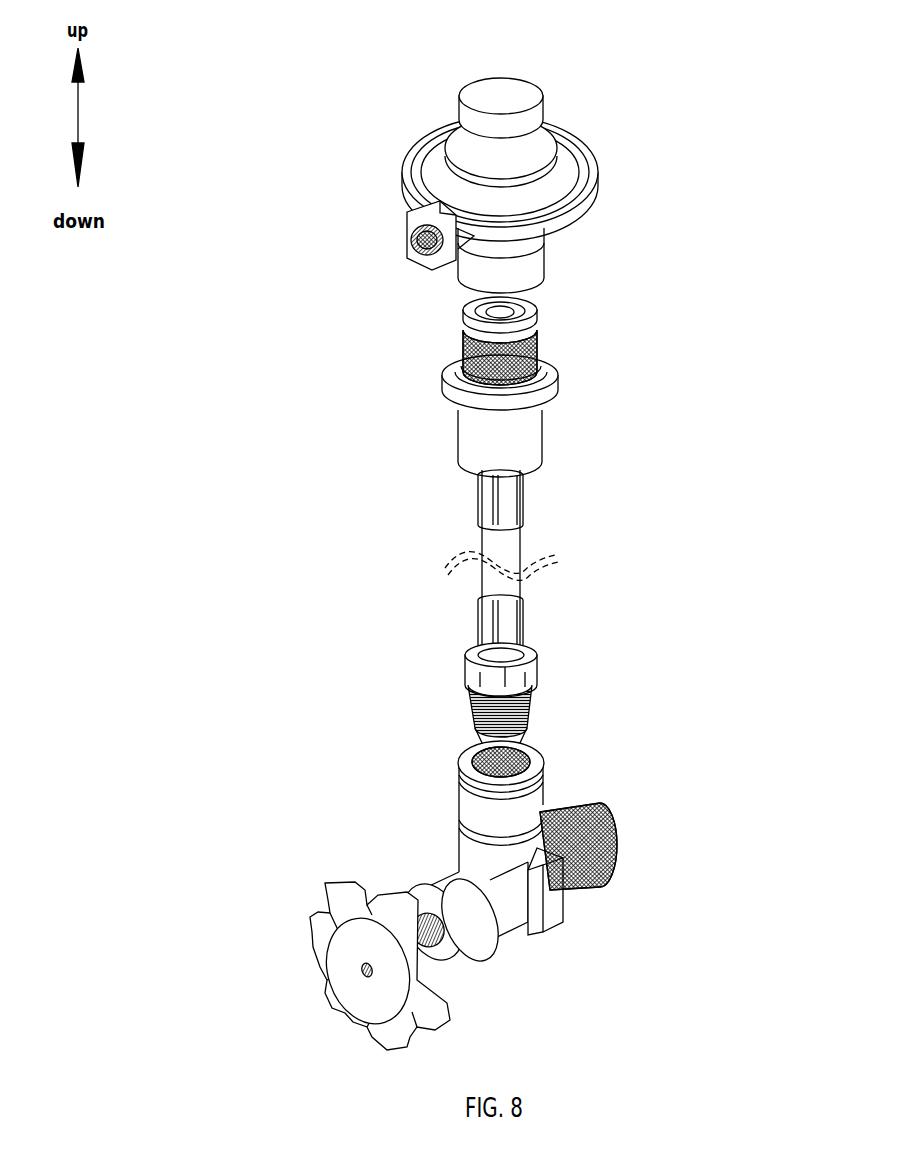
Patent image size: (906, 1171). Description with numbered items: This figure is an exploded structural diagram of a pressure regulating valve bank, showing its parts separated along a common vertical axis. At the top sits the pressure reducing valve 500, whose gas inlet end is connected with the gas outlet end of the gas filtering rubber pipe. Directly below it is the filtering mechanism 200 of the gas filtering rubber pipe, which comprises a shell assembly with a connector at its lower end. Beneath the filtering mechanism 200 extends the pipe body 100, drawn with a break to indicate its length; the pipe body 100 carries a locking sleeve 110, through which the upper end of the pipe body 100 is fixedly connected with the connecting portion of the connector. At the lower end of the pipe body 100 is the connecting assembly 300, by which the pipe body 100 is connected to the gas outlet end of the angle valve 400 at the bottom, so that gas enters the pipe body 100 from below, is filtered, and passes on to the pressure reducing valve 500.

The pipe body 100 is at (493, 572).
The locking sleeve 110 is at (510, 497).
The filtering mechanism 200 is at (470, 430).
The connecting assembly 300 is at (470, 688).
The angle valve 400 is at (487, 860).
The pressure reducing valve 500 is at (528, 267).